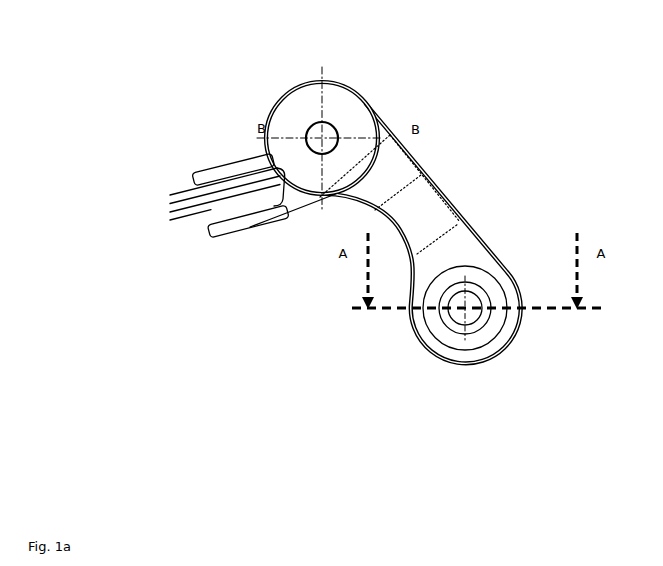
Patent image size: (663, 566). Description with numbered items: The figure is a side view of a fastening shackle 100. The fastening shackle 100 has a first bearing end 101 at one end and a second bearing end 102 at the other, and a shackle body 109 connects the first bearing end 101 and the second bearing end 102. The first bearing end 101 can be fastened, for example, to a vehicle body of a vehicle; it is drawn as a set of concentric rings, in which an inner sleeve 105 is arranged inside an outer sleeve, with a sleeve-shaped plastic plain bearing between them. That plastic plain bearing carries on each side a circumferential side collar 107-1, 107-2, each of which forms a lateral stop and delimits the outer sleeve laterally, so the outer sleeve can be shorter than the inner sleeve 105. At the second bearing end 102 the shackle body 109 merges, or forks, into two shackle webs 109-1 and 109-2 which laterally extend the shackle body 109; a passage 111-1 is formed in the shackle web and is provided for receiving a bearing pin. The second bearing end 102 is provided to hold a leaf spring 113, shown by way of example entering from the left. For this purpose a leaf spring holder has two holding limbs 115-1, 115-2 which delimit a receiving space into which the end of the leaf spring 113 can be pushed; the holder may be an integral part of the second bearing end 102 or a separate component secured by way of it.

The fastening shackle 100 is at (189, 166).
The first bearing end 101 is at (509, 353).
The second bearing end 102 is at (270, 79).
The inner sleeve 105 is at (455, 322).
The circumferential side collar 107-1 is at (493, 280).
The circumferential side collar 107-2 is at (465, 308).
The shackle body 109 is at (421, 191).
The shackle web 109-1 is at (337, 105).
The shackle web 109-2 is at (322, 138).
The passage 111-1 is at (329, 136).
The leaf spring 113 is at (191, 216).
The holding limb 115-1 is at (265, 222).
The holding limb 115-2 is at (248, 162).